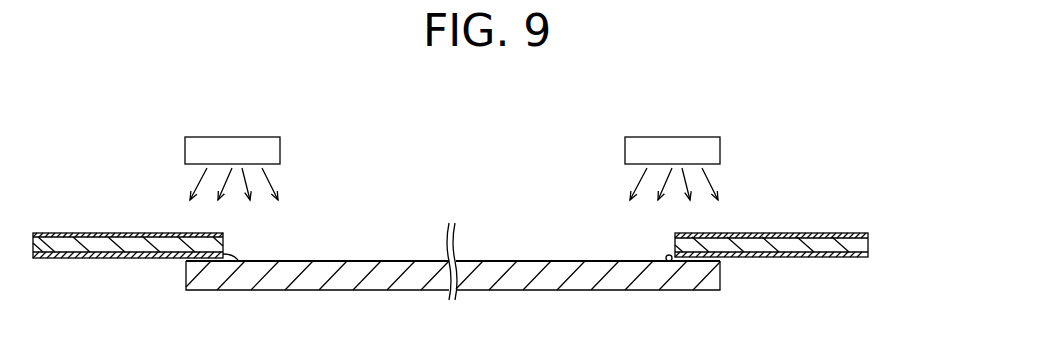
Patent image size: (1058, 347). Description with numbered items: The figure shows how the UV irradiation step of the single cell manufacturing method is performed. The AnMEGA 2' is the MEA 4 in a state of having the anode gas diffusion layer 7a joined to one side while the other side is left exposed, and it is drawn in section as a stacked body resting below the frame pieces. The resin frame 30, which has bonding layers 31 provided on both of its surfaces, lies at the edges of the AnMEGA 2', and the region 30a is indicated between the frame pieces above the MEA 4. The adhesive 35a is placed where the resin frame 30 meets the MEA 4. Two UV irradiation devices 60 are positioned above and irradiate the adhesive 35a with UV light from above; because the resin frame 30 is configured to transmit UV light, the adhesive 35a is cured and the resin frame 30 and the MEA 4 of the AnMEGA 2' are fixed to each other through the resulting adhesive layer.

The UV irradiation device 60 is at (235, 144).
The opening of the sheet 30a is at (505, 217).
The MEA 4 is at (323, 260).
The anode gas diffusion layer 7a is at (703, 282).
The adhesive 35a is at (665, 256).
The bonding layer 31 is at (815, 233).
The resin frame 30 is at (877, 235).
The AnMEGA 2' is at (808, 296).